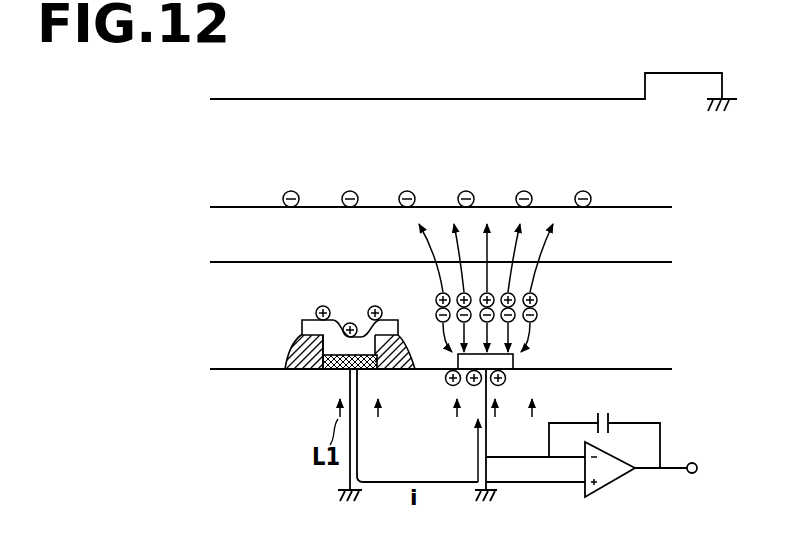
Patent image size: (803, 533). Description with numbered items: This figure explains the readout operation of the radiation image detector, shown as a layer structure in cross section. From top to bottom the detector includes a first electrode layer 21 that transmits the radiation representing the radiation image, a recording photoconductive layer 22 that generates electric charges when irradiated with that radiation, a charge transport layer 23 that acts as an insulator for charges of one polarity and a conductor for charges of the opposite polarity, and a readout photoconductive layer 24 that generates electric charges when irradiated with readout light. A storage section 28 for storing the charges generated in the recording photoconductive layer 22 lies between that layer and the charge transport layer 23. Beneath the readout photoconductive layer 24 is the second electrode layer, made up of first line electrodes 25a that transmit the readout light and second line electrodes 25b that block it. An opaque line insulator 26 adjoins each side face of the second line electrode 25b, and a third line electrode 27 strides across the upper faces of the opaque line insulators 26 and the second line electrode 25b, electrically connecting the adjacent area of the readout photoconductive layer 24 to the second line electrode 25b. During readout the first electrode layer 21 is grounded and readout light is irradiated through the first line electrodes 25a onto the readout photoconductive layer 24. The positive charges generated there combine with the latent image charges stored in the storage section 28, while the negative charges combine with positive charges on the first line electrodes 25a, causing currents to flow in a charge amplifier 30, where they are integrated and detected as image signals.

The first electrode layer 21 is at (211, 99).
The recording photoconductive layer 22 is at (218, 137).
The charge transport layer 23 is at (218, 231).
The readout photoconductive layer 24 is at (218, 281).
The first line electrode 25a is at (513, 361).
The second line electrode 25b is at (332, 358).
The opaque line insulator 26 is at (300, 357).
The third line electrode 27 is at (390, 321).
The storage section 28 is at (239, 205).
The charge amplifier 30 is at (620, 489).